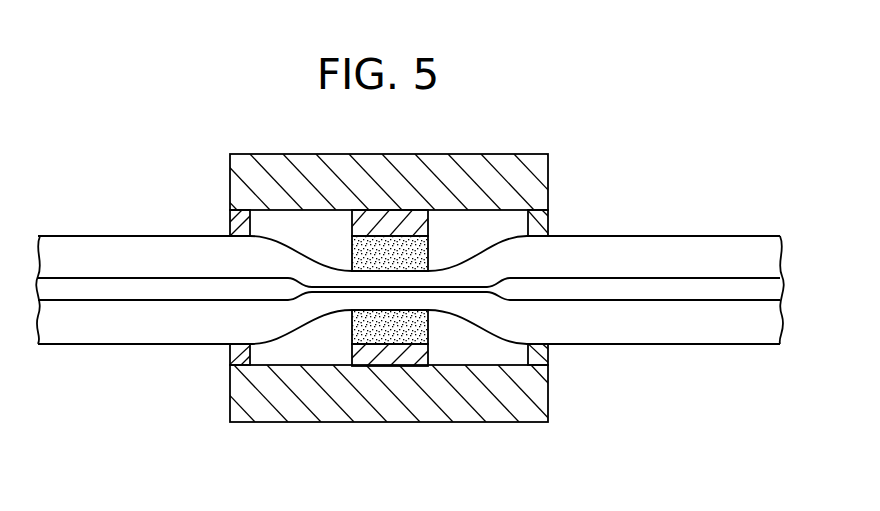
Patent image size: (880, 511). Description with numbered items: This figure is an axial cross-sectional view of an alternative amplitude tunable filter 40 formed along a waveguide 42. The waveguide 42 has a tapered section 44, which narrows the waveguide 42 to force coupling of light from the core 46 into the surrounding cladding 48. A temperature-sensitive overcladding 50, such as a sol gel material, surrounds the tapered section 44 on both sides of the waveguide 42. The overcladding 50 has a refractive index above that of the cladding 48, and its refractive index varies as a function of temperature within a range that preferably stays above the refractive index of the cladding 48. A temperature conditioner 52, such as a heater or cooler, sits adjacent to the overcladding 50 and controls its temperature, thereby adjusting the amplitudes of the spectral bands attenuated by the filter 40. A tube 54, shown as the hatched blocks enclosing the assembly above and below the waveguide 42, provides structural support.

The amplitude tunable filter 40 is at (409, 286).
The waveguide 42 is at (409, 326).
The tapered section 44 is at (302, 323).
The core 46 is at (680, 290).
The cladding 48 is at (727, 322).
The temperature-sensitive overcladding 50 is at (417, 253).
The temperature conditioner 52 is at (360, 224).
The tube 54 is at (440, 173).